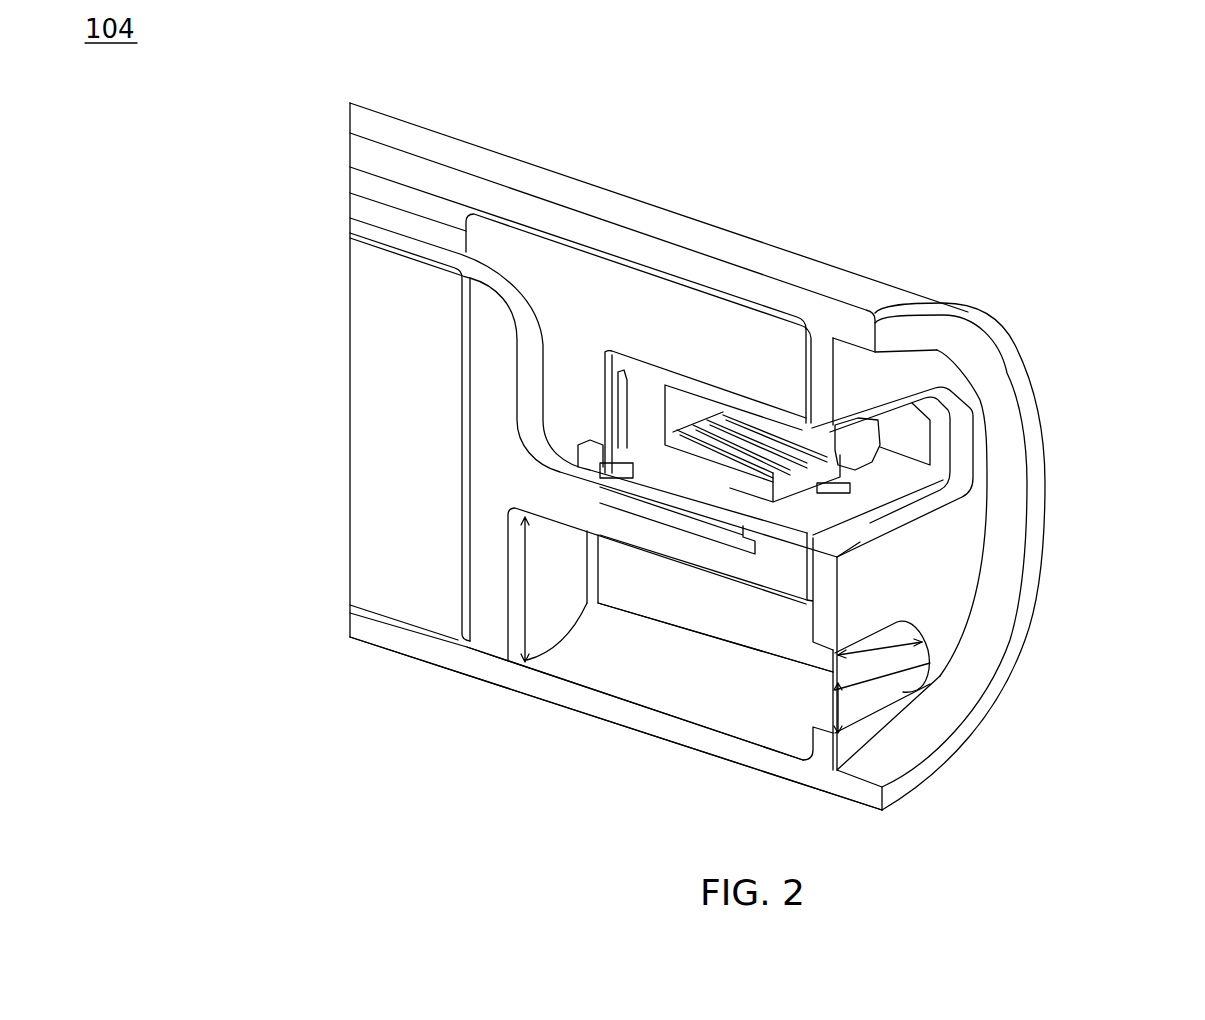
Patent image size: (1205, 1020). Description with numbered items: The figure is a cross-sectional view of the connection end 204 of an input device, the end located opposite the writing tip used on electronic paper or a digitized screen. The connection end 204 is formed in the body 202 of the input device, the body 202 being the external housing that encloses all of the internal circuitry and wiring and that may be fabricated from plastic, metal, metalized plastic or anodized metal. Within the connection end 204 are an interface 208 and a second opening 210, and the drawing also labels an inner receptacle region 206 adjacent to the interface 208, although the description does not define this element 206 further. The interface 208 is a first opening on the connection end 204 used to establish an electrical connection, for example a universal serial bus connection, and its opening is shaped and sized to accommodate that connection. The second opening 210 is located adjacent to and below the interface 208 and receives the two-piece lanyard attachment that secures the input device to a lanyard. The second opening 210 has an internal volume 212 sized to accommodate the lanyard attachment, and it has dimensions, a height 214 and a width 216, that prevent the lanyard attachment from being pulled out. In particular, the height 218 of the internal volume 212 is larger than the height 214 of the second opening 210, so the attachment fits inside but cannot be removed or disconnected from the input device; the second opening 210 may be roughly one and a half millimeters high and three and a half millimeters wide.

The body 202 is at (665, 207).
The connection end 204 is at (958, 313).
The connector receptacle opening 206 is at (940, 432).
The interface 208 is at (725, 432).
The second opening 210 is at (934, 660).
The internal volume 212 is at (607, 660).
The height of the second opening 214 is at (832, 706).
The width of the second opening 216 is at (920, 683).
The height of the internal volume 218 is at (527, 598).